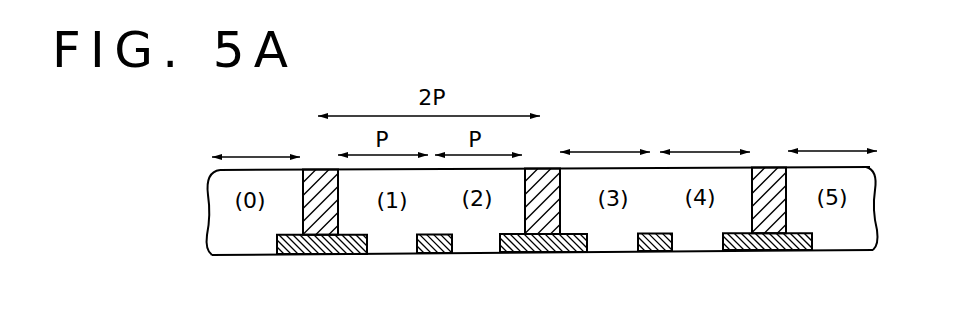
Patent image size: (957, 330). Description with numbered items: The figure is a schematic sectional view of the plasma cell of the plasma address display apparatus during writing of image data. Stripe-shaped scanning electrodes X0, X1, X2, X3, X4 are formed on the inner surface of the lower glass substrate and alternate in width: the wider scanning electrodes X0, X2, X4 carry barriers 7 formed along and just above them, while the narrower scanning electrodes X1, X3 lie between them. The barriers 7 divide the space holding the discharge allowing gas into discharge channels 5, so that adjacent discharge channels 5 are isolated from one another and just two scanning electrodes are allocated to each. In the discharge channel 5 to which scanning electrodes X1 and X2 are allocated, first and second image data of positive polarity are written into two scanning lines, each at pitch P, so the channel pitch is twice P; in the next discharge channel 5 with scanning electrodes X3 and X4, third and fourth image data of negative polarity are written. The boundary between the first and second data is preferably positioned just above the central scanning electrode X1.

The discharge channel 5 is at (462, 226).
The barrier 7 is at (768, 167).
The scanning electrode X0 is at (320, 255).
The scanning electrode X1 is at (432, 254).
The scanning electrode X2 is at (543, 253).
The scanning electrode X3 is at (655, 252).
The scanning electrode X4 is at (767, 251).